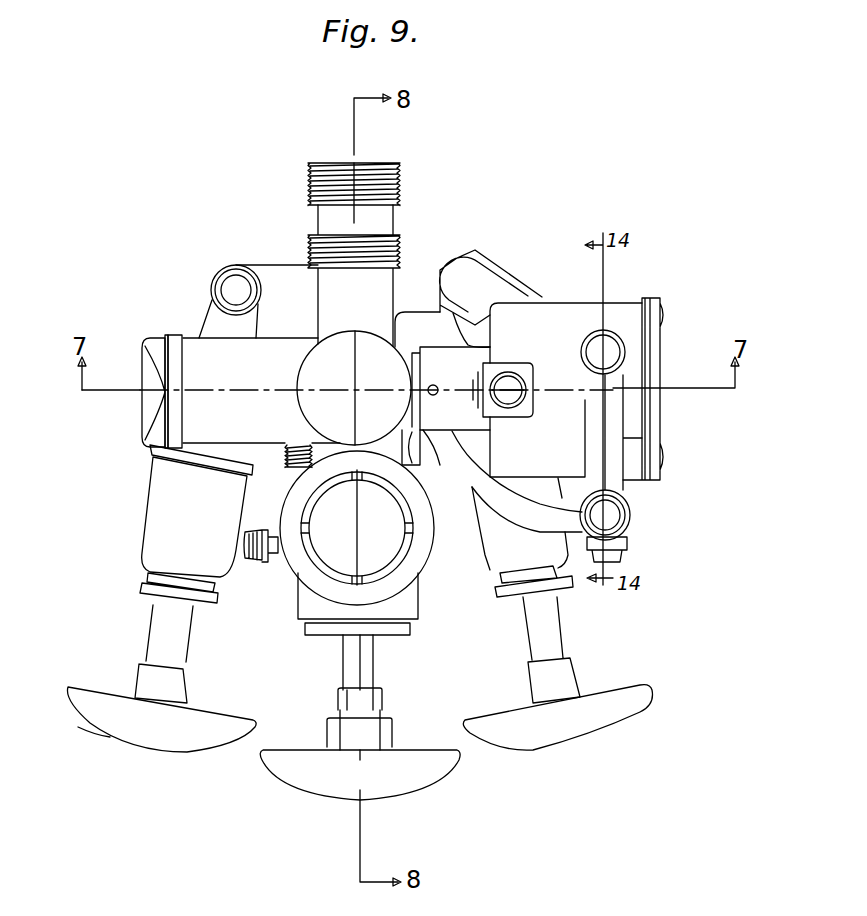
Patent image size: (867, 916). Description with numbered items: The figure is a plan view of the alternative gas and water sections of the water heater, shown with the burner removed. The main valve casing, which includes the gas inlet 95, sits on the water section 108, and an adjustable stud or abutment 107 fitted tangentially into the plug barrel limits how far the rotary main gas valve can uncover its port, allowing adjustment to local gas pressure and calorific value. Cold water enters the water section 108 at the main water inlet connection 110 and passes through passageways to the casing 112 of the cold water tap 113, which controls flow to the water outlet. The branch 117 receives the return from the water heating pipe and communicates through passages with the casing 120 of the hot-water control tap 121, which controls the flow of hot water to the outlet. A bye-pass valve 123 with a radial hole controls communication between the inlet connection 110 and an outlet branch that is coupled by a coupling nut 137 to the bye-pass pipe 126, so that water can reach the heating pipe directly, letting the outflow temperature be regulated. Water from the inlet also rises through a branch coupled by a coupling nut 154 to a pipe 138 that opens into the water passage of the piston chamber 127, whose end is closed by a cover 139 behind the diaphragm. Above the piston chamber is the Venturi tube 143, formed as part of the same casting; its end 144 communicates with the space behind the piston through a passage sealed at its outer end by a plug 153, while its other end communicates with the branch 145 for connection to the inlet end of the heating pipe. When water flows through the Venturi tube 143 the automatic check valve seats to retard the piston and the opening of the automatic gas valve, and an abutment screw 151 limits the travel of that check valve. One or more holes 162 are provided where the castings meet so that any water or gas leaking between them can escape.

The gas inlet 95 is at (403, 240).
The adjustable stud or abutment 107 is at (270, 560).
The water section 108 is at (275, 277).
The main water inlet connection 110 is at (327, 177).
The casing of cold water tap 112 is at (573, 567).
The cold water tap 113 is at (613, 713).
The branch 117 is at (220, 273).
The casing of hot-water control tap 120 is at (167, 477).
The hot-water control tap 121 is at (157, 733).
The bye-pass valve 123 is at (412, 778).
The bye-pass pipe 126 is at (512, 510).
The piston chamber 127 is at (627, 303).
The coupling nut 137 is at (425, 455).
The pipe 138 is at (510, 295).
The cover 139 is at (650, 352).
The Venturi tube 143 is at (603, 430).
The end of Venturi tube 144 is at (587, 377).
The branch 145 is at (627, 515).
The abutment screw 151 is at (475, 375).
The plug 153 is at (610, 345).
The coupling nut 154 is at (473, 250).
The holes 162 is at (435, 395).